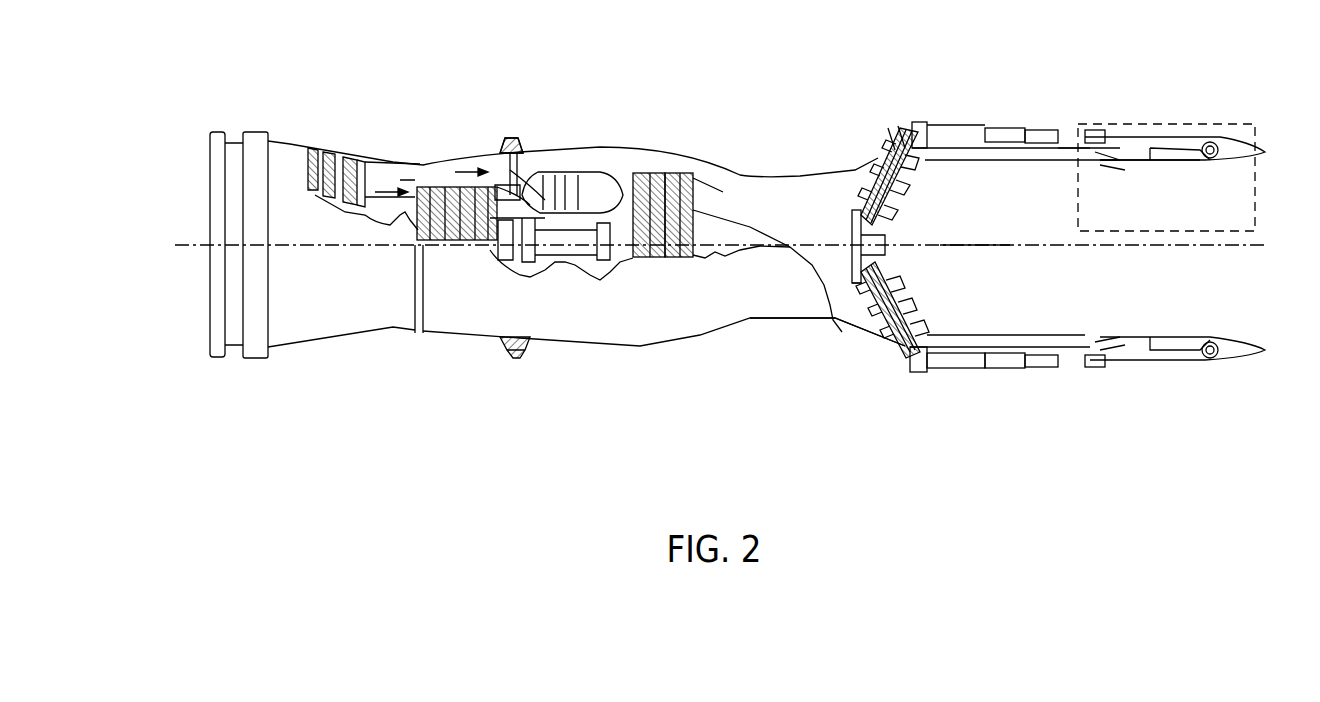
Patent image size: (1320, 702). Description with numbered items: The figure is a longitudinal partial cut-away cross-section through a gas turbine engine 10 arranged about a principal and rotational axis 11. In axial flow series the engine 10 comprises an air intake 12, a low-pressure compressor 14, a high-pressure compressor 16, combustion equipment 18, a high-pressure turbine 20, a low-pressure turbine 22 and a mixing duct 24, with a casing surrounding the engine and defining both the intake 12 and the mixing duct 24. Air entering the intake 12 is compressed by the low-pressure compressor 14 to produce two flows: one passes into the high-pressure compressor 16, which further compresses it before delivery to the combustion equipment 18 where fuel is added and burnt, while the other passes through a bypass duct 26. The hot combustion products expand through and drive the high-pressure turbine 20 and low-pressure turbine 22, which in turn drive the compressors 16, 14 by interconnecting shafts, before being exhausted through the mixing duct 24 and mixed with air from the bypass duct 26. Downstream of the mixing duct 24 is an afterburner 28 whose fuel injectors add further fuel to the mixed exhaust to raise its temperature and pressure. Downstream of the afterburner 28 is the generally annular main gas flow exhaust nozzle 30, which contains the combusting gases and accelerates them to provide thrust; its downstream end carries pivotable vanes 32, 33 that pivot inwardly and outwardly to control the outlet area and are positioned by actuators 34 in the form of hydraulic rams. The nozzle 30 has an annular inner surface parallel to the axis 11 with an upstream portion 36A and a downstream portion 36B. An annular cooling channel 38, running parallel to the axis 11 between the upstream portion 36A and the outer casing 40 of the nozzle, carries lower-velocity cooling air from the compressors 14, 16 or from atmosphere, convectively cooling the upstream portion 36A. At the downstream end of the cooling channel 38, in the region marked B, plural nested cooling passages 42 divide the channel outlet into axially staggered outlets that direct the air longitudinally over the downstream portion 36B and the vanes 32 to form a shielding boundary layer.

The gas turbine engine 10 is at (502, 432).
The principal and rotational axis 11 is at (963, 250).
The air intake 12 is at (217, 173).
The low-pressure compressor 14 is at (337, 148).
The high-pressure compressor 16 is at (438, 182).
The combustion equipment 18 is at (560, 170).
The high-pressure turbine 20 is at (640, 173).
The low-pressure turbine 22 is at (672, 170).
The mixing duct 24 is at (847, 325).
The bypass duct 26 is at (555, 158).
The afterburner 28 is at (878, 165).
The main gas flow exhaust nozzle 30 is at (1160, 345).
The pivotable vane 32 is at (1188, 160).
The pivotable vane 33 is at (1222, 143).
The actuators 34 is at (950, 372).
The upstream portion of inner surface 36A is at (957, 150).
The downstream portion of inner surface 36B is at (1170, 165).
The annular cooling channel 38 is at (1060, 143).
The outer casing 40 is at (980, 147).
The nested cooling passages 42 is at (1115, 155).
The detail region B is at (1078, 185).